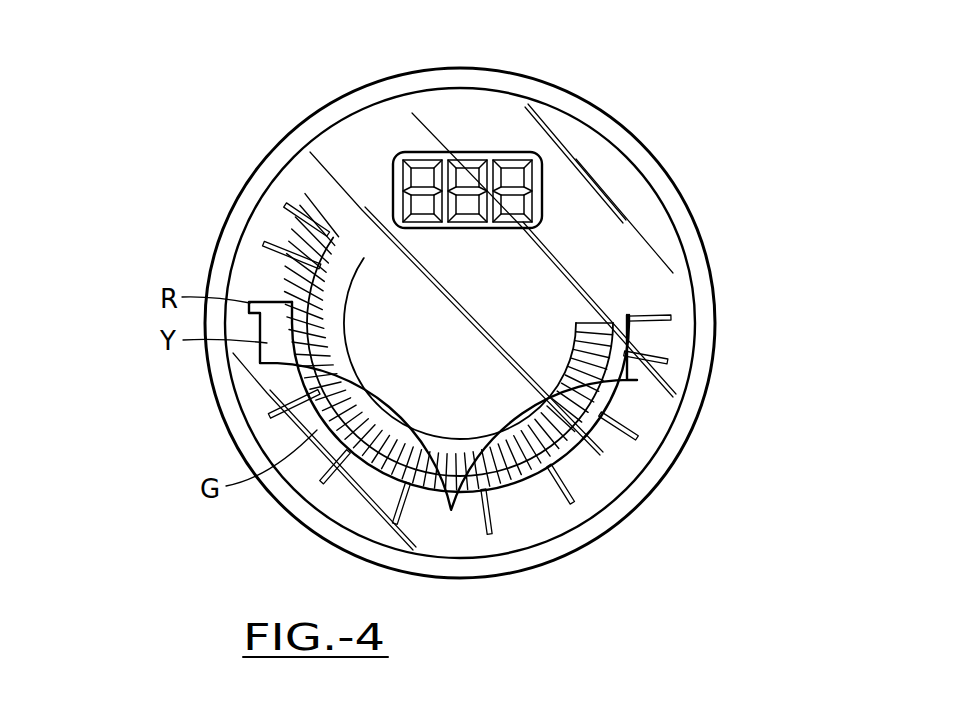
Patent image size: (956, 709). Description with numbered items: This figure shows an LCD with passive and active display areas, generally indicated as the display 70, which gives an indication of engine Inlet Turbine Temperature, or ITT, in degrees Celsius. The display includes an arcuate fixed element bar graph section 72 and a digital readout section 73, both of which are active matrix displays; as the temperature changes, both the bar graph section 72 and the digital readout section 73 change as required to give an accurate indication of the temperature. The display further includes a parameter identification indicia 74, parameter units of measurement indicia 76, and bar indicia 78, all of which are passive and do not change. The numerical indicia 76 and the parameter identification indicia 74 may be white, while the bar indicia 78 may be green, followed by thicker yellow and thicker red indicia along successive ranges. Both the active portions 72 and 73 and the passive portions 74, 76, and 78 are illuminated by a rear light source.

The LCD with passive and active display areas 70 is at (238, 192).
The arcuate fixed element bar graph section 72 is at (597, 313).
The digital readout section 73 is at (407, 147).
The parameter identification indicia 74 is at (500, 317).
The parameter units of measurement indicia 76 is at (647, 310).
The bar indicia 78 is at (528, 503).